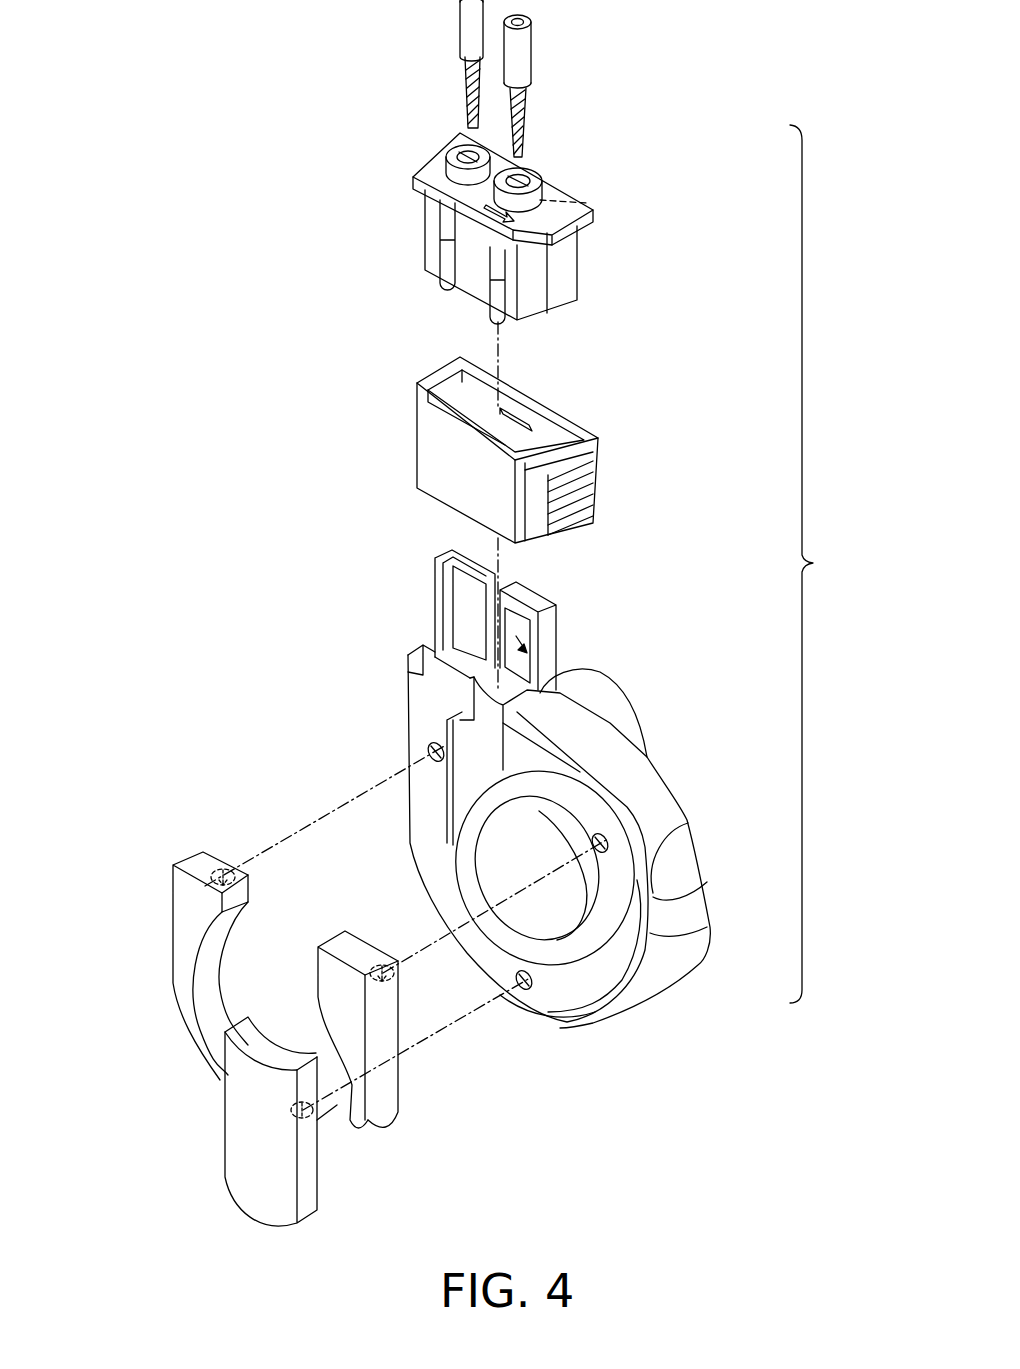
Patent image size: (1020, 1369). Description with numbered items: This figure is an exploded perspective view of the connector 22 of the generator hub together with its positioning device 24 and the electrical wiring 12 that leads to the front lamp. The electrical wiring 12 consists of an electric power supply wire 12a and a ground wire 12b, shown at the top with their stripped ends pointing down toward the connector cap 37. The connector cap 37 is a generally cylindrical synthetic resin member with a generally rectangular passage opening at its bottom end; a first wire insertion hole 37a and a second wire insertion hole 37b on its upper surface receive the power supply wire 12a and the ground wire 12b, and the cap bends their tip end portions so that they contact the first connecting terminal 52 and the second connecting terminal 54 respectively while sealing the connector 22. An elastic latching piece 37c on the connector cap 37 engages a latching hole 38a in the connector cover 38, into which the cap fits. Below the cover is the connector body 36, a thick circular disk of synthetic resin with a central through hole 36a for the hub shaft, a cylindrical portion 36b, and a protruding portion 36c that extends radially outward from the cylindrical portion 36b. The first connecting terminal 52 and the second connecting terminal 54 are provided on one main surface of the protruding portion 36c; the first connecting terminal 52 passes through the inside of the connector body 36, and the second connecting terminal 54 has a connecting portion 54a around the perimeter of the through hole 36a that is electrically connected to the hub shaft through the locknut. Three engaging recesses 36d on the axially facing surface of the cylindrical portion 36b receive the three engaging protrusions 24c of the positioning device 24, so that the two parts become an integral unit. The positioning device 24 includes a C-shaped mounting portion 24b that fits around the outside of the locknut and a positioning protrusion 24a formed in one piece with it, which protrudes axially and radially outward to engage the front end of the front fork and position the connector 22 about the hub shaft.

The electrical wiring 12 is at (543, 50).
The electric power supply wire 12a is at (474, 29).
The ground wire 12b is at (478, 69).
The connector 22 is at (834, 564).
The positioning device 24 is at (302, 1000).
The positioning protrusion 24a is at (243, 1158).
The mounting portion 24b is at (164, 913).
The engaging protrusions 24c is at (228, 866).
The connector body 36 is at (484, 780).
The through hole 36a is at (492, 820).
The cylindrical portion 36b is at (570, 1008).
The protruding portion 36c is at (428, 616).
The engaging recesses 36d is at (434, 752).
The connector cap 37 is at (592, 238).
The first wire insertion hole 37a is at (456, 139).
The second wire insertion hole 37b is at (540, 170).
The elastic latching piece 37c is at (557, 206).
The connector cover 38 is at (598, 414).
The latching hole 38a is at (511, 409).
The first connecting terminal 52 is at (462, 597).
The second connecting terminal 54 is at (560, 690).
The connecting portion 54a is at (483, 772).